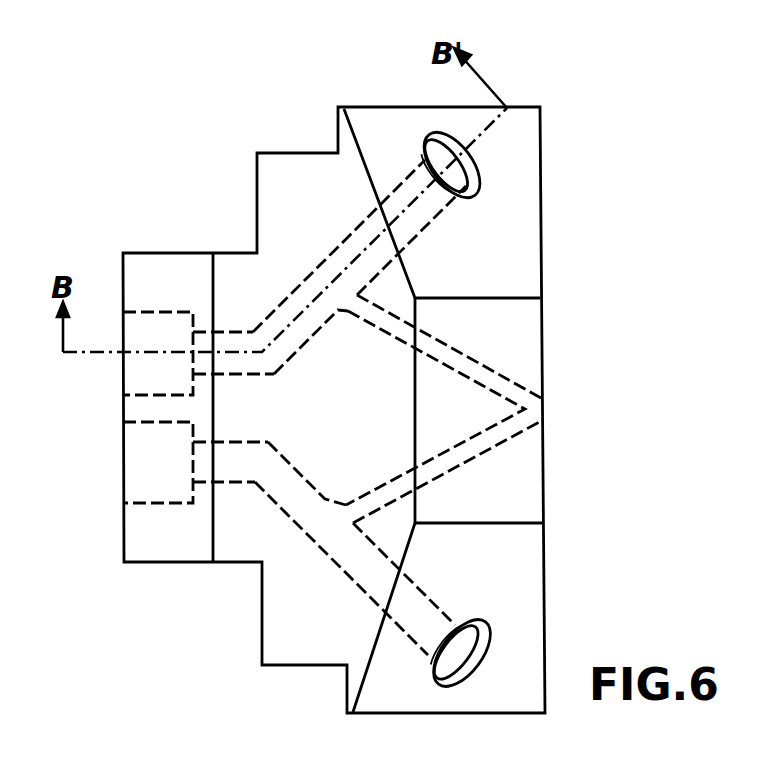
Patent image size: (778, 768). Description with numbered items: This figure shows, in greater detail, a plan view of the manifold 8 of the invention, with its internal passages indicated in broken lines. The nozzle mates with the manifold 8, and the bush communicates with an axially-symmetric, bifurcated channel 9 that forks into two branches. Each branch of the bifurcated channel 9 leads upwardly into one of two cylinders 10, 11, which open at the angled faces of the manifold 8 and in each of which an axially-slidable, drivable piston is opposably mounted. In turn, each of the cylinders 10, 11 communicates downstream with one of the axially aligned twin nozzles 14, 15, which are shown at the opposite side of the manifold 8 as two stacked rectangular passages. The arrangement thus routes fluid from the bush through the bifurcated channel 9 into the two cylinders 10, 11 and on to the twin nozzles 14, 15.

The manifold 8 is at (519, 280).
The bifurcated channel 9 is at (492, 428).
The cylinder 10 is at (333, 250).
The cylinder 11 is at (357, 588).
The nozzle 14 is at (148, 312).
The nozzle 15 is at (122, 485).